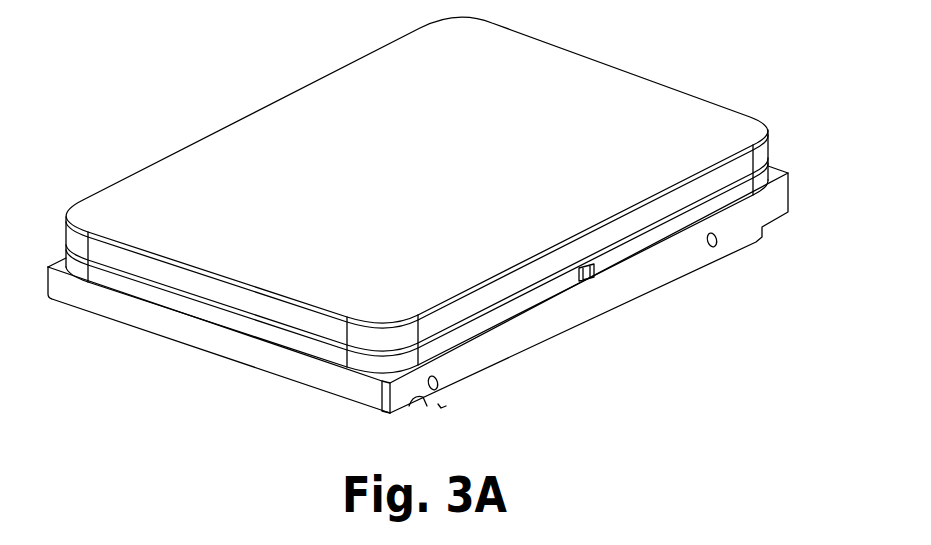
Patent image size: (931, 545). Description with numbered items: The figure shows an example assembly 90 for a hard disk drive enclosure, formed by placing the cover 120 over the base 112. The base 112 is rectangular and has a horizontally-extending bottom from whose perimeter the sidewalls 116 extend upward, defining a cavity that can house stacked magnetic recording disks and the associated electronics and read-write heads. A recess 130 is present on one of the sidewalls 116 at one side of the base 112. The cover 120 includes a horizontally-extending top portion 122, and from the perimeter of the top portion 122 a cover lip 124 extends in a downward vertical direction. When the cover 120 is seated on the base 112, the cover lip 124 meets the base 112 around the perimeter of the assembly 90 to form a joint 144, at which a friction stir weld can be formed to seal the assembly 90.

The assembly 90 is at (246, 60).
The base 112 is at (107, 308).
The sidewalls 116 is at (673, 227).
The cover 120 is at (128, 177).
The top portion 122 is at (513, 166).
The cover lip 124 is at (745, 158).
The recess 130 is at (600, 287).
The joint 144 is at (248, 336).